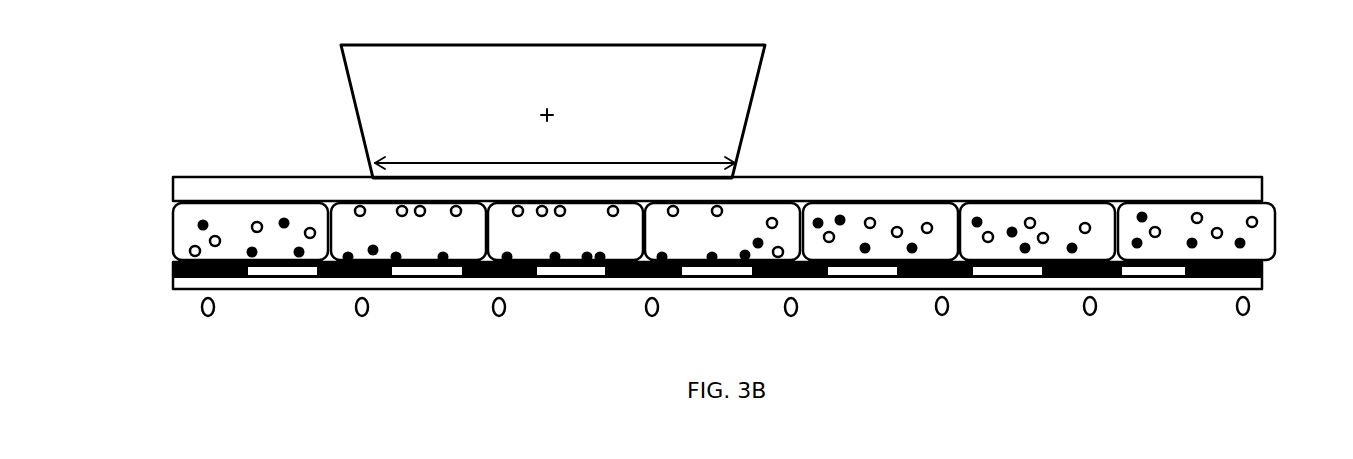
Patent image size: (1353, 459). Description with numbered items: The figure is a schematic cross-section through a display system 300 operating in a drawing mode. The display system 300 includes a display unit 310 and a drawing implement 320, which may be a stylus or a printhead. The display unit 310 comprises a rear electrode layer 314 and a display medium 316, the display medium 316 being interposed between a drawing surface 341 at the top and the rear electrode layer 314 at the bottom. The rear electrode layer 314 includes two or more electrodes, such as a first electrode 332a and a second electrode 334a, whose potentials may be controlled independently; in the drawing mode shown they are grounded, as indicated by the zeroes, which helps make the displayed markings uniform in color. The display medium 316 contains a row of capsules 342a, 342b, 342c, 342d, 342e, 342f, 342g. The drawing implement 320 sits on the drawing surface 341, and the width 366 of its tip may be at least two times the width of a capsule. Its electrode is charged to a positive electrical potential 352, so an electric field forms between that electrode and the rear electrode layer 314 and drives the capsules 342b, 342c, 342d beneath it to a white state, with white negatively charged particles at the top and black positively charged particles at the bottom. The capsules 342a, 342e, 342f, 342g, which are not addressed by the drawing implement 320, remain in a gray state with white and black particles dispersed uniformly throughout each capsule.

The display system 300 is at (947, 78).
The display unit 310 is at (1032, 143).
The drawing implement 320 is at (753, 105).
The electrical potential 352 is at (552, 110).
The width of the tip 366 is at (560, 163).
The drawing surface 341 is at (1168, 177).
The display medium 316 is at (1288, 200).
The rear electrode layer 314 is at (737, 312).
The first electrode 332a is at (190, 278).
The second electrode 334a is at (331, 265).
The capsule 342a is at (277, 255).
The capsule 342b is at (423, 250).
The capsule 342c is at (572, 250).
The capsule 342d is at (727, 245).
The capsule 342e is at (850, 250).
The capsule 342f is at (998, 250).
The capsule 342g is at (1157, 250).